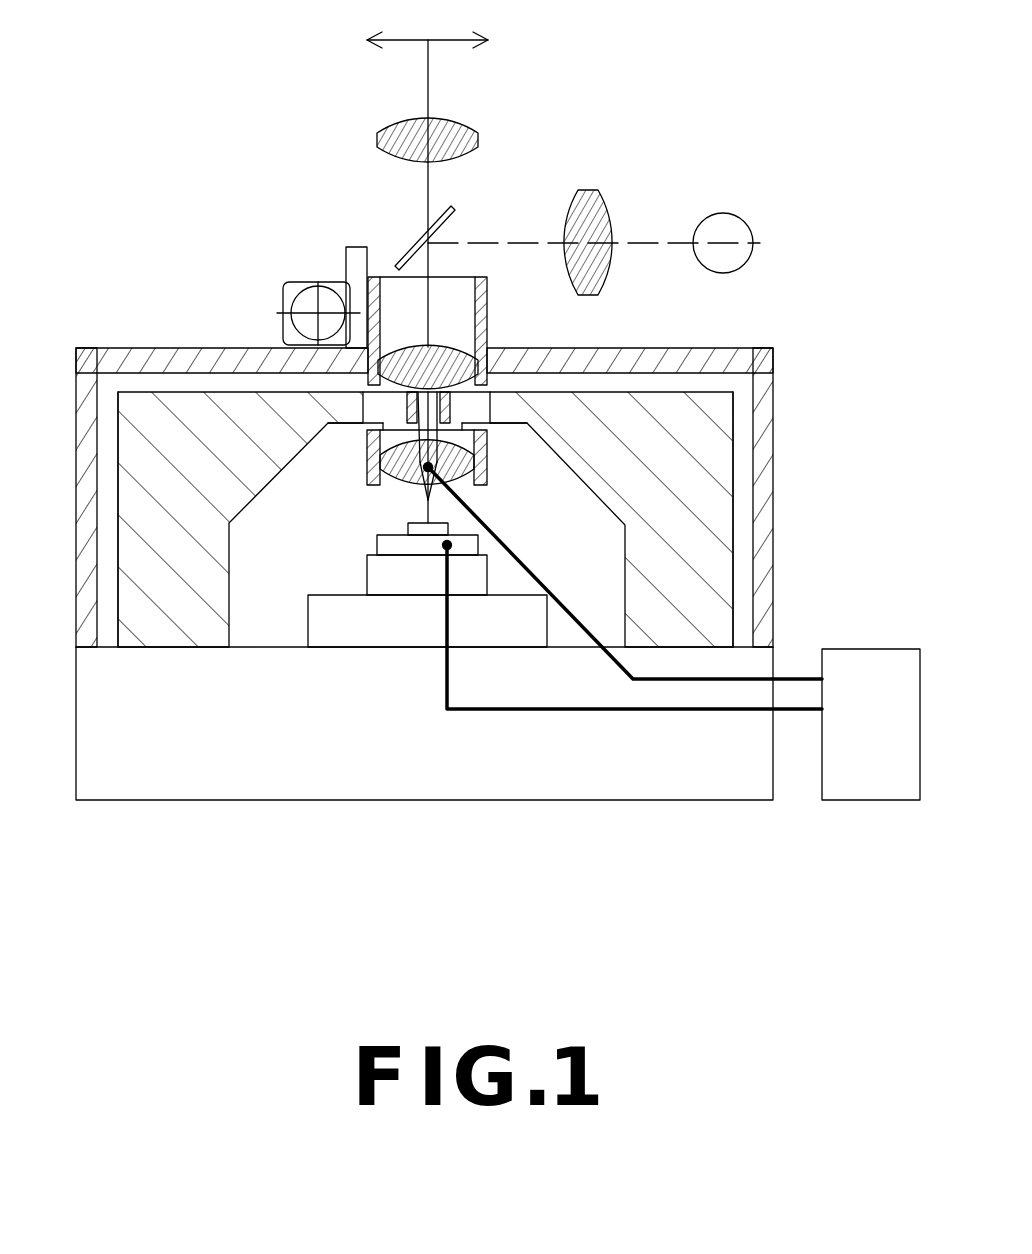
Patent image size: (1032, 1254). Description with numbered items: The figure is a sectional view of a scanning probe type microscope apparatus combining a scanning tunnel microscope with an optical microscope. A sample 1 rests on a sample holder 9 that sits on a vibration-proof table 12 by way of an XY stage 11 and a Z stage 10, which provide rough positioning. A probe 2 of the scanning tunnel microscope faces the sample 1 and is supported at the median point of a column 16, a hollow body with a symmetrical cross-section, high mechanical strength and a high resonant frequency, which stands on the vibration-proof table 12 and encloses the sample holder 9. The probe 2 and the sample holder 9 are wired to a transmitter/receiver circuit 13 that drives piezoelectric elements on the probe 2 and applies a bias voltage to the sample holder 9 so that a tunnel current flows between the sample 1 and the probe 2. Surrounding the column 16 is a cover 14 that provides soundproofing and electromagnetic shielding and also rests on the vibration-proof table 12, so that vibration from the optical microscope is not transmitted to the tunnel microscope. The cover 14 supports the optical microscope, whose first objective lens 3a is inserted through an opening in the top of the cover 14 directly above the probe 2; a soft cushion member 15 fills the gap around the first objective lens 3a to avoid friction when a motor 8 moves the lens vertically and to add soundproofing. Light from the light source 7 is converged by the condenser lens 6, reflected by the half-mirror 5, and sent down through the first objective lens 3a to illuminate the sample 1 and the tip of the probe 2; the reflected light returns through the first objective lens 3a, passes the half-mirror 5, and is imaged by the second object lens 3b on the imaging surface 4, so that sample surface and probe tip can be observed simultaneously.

The sample 1 is at (410, 528).
The probe 2 is at (367, 462).
The first objective lens 3a is at (487, 458).
The second object lens 3b is at (463, 122).
The imaging surface 4 is at (478, 36).
The half-mirror 5 is at (455, 207).
The condenser lens 6 is at (602, 197).
The light source 7 is at (735, 228).
The motor 8 is at (293, 283).
The sample holder 9 is at (432, 547).
The Z stage 10 is at (467, 583).
The XY stage 11 is at (505, 637).
The vibration-proof table 12 is at (680, 772).
The transmitter/receiver circuit 13 is at (860, 783).
The cover 14 is at (766, 470).
The soft cushion member 15 is at (340, 363).
The column 16 is at (158, 647).